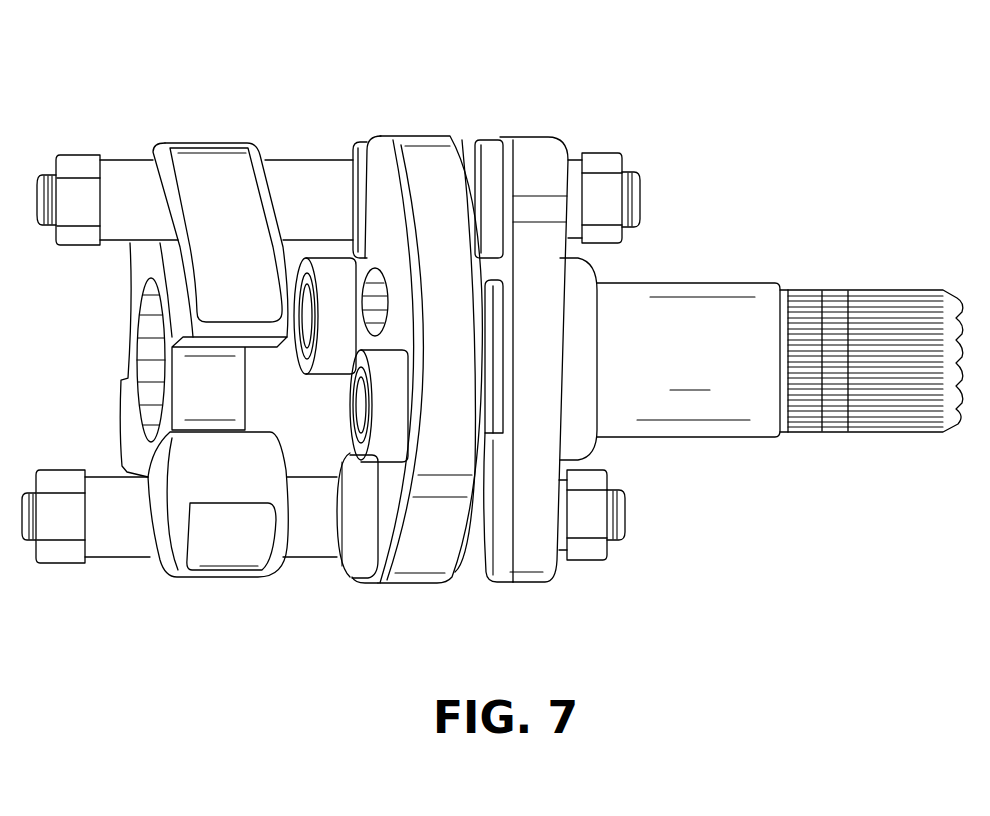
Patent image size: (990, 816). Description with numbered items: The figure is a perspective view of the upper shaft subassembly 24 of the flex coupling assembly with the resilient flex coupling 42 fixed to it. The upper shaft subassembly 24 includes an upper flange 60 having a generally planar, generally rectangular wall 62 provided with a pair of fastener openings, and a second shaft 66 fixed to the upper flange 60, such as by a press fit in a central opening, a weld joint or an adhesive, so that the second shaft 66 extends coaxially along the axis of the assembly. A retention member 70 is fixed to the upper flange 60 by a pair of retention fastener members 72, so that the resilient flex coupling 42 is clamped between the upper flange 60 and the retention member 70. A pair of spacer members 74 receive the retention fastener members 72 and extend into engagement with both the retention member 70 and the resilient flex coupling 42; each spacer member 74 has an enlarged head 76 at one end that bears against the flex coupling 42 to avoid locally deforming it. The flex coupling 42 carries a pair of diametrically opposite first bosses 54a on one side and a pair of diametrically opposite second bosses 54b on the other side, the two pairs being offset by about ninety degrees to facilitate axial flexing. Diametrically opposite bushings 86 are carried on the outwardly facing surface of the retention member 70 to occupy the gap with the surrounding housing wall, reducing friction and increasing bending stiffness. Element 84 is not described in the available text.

The upper shaft subassembly 24 is at (598, 99).
The retention member 70 is at (135, 146).
The bushings 86 is at (220, 185).
The spacer members 74 is at (300, 152).
The first bosses 54a is at (353, 424).
The enlarged head 76 is at (348, 148).
The resilient flex coupling 42 is at (418, 130).
The second bosses 54b is at (472, 147).
The spacer 84 is at (487, 575).
The upper flange 60 is at (523, 128).
The wall 62 is at (528, 583).
The retention fastener members 72 is at (637, 197).
The second shaft 66 is at (712, 282).